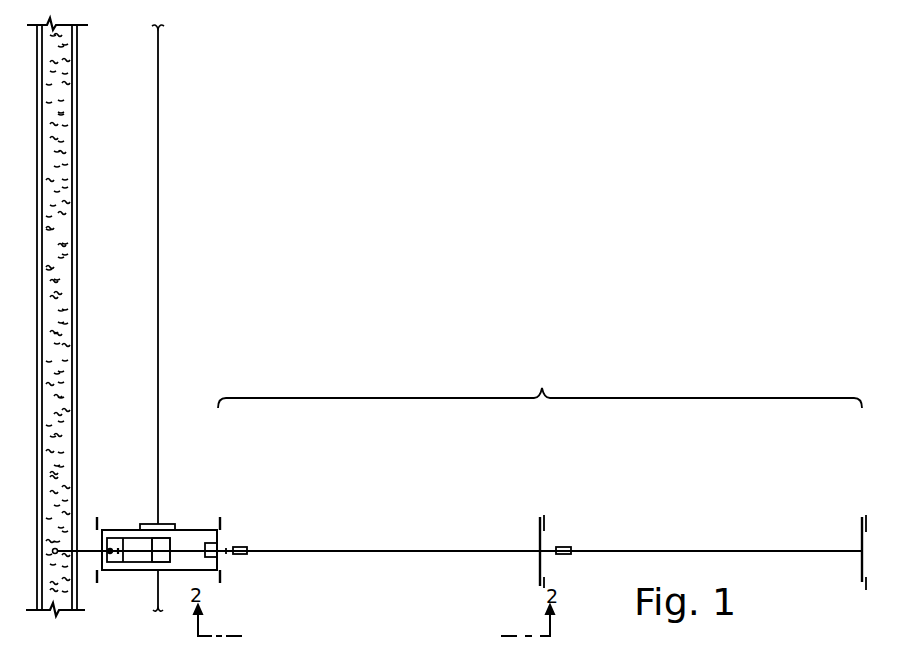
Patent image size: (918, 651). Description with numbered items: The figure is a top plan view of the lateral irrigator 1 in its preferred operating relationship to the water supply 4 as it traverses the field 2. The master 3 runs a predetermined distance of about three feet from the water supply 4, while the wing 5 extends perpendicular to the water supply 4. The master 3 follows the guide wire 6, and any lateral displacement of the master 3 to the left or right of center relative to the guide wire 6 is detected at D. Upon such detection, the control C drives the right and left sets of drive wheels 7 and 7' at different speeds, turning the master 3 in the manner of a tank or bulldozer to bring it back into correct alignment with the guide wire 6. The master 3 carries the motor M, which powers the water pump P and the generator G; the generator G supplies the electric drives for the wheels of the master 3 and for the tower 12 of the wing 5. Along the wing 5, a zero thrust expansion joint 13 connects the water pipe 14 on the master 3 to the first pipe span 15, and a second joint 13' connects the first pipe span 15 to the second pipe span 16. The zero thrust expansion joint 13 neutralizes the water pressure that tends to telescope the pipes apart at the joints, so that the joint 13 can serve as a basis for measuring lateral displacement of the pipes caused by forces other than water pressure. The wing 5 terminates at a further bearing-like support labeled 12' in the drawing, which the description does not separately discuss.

The lateral irrigator 1 is at (630, 373).
The field 2 is at (447, 192).
The master 3 is at (172, 497).
The water supply 4 is at (65, 316).
The wing 5 is at (458, 459).
The guide wire 6 is at (160, 238).
The right set of drive wheels 7 is at (237, 560).
The left set of drive wheels 7' is at (107, 567).
The tower 12 is at (517, 551).
The bearing 12' is at (836, 552).
The zero thrust expansion joint 13 is at (259, 537).
The second joint 13' is at (585, 536).
The water pipe 14 is at (230, 548).
The first pipe span 15 is at (404, 547).
The second pipe span 16 is at (727, 548).
The motor M is at (132, 528).
The water pump P is at (113, 538).
The generator G is at (160, 564).
The detection point D is at (163, 524).
The control C is at (210, 543).